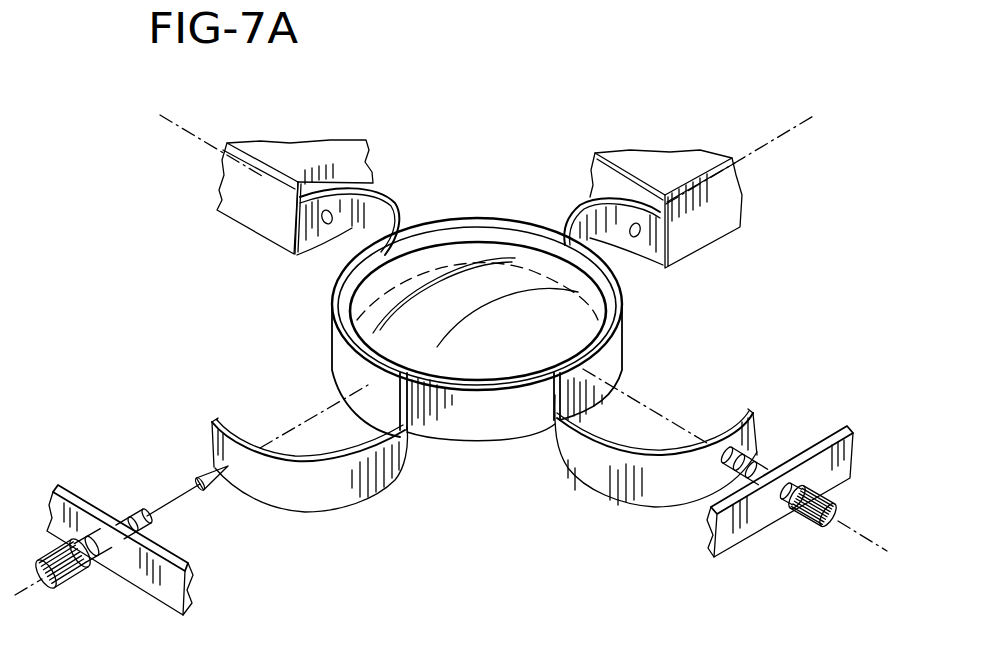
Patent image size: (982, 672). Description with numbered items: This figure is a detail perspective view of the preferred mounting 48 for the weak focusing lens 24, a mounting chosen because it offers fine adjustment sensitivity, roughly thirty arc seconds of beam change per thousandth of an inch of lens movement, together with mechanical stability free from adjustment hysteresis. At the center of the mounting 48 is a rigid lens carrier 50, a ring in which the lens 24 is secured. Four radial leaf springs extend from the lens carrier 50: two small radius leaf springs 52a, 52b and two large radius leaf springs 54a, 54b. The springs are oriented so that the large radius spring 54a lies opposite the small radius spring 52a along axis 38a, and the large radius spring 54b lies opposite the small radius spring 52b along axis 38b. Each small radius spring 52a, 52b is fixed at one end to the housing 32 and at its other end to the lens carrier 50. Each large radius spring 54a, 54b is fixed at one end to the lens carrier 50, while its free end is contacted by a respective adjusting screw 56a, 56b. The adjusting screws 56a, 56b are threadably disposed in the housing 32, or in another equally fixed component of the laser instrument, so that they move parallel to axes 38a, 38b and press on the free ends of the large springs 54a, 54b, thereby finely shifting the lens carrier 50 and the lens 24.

The weak focusing lens 24 is at (520, 349).
The housing 32 is at (287, 153).
The axis 38a is at (778, 137).
The axis 38b is at (172, 122).
The mounting 48 is at (282, 333).
The rigid lens carrier 50 is at (508, 220).
The small radius leaf spring 52a is at (645, 247).
The small radius leaf spring 52b is at (342, 227).
The large radius leaf spring 54a is at (246, 441).
The large radius leaf spring 54b is at (720, 428).
The adjusting screw 56a is at (73, 578).
The adjusting screw 56b is at (800, 523).